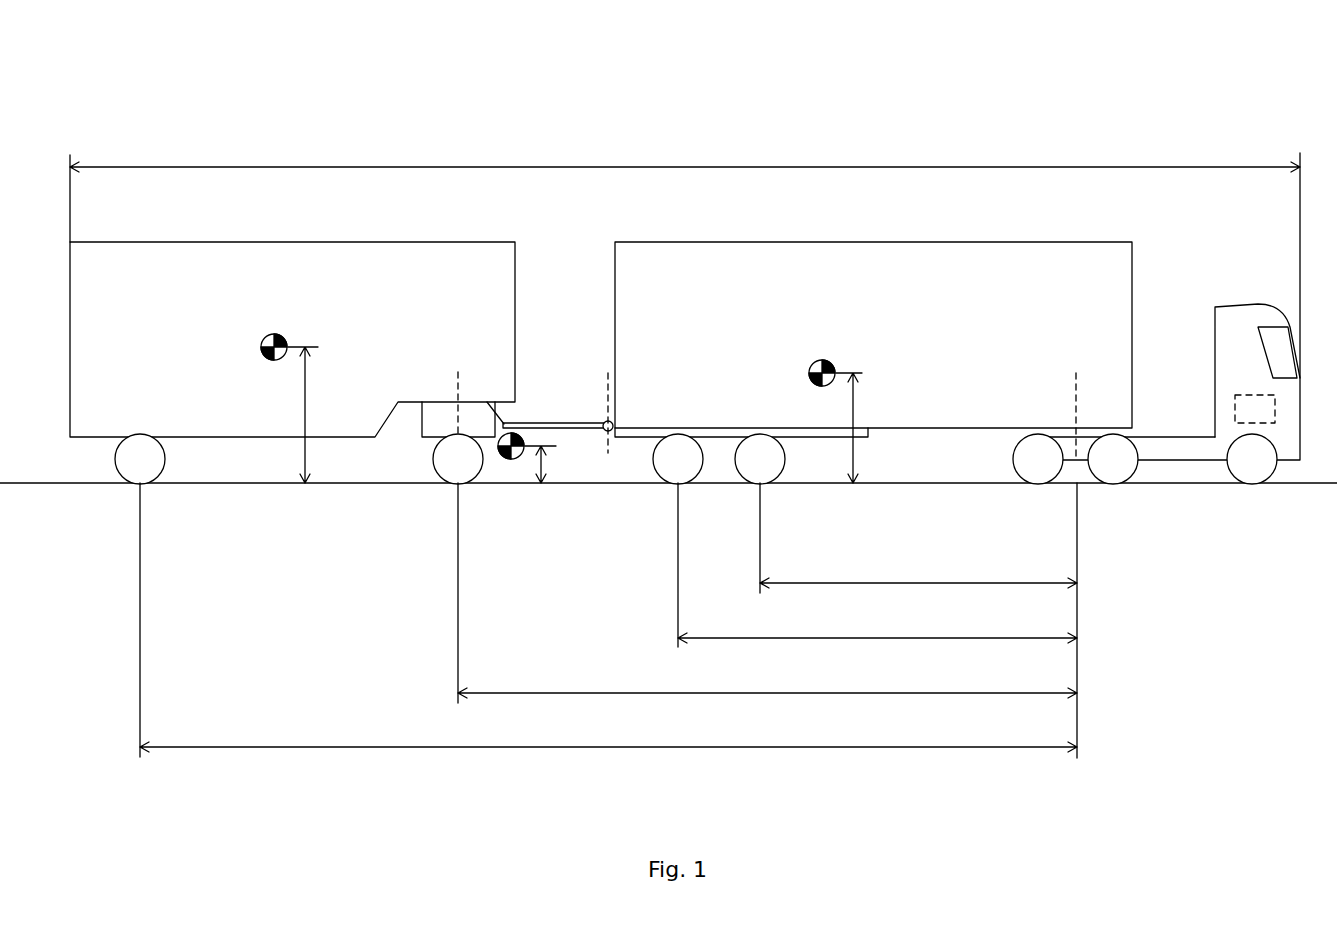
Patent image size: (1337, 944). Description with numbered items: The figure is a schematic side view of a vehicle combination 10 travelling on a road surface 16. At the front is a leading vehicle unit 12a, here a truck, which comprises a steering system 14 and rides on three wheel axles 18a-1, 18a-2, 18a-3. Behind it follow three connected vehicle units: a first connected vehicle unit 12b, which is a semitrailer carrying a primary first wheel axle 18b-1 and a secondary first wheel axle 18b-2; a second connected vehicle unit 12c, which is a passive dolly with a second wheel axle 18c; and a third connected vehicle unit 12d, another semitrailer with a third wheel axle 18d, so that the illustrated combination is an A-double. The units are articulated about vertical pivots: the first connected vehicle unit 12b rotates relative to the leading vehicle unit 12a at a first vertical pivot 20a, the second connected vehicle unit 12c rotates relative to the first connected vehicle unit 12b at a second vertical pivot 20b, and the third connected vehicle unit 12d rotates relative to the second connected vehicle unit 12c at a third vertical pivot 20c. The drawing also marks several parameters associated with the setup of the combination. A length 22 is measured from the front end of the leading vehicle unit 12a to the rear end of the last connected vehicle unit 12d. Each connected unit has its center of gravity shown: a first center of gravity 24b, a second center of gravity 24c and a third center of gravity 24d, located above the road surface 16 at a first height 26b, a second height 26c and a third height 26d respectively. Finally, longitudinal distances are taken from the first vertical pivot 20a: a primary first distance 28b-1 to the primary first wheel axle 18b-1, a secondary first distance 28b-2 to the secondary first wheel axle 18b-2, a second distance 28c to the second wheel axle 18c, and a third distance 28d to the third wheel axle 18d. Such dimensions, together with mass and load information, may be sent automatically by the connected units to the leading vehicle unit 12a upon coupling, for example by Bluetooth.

The vehicle combination 10 is at (256, 62).
The leading vehicle unit 12a is at (1243, 315).
The first connected vehicle unit 12b is at (907, 304).
The second connected vehicle unit 12c is at (538, 423).
The third connected vehicle unit 12d is at (298, 304).
The steering system 14 is at (1235, 410).
The road surface 16 is at (40, 480).
The wheel axle 18a-1 is at (1253, 460).
The wheel axle 18a-2 is at (1113, 460).
The wheel axle 18a-3 is at (1040, 460).
The primary first wheel axle 18b-1 is at (770, 460).
The secondary first wheel axle 18b-2 is at (668, 460).
The second wheel axle 18c is at (447, 460).
The third wheel axle 18d is at (128, 460).
The first vertical pivot 20a is at (1072, 395).
The second vertical pivot 20b is at (615, 398).
The third vertical pivot 20c is at (457, 395).
The length 22 is at (685, 256).
The first center of gravity 24b is at (810, 365).
The second center of gravity 24c is at (504, 432).
The third center of gravity 24d is at (262, 340).
The first height 26b is at (870, 428).
The second height 26c is at (548, 458).
The third height 26d is at (285, 415).
The primary first distance 28b-1 is at (918, 570).
The secondary first distance 28b-2 is at (877, 625).
The second distance 28c is at (767, 680).
The third distance 28d is at (608, 735).